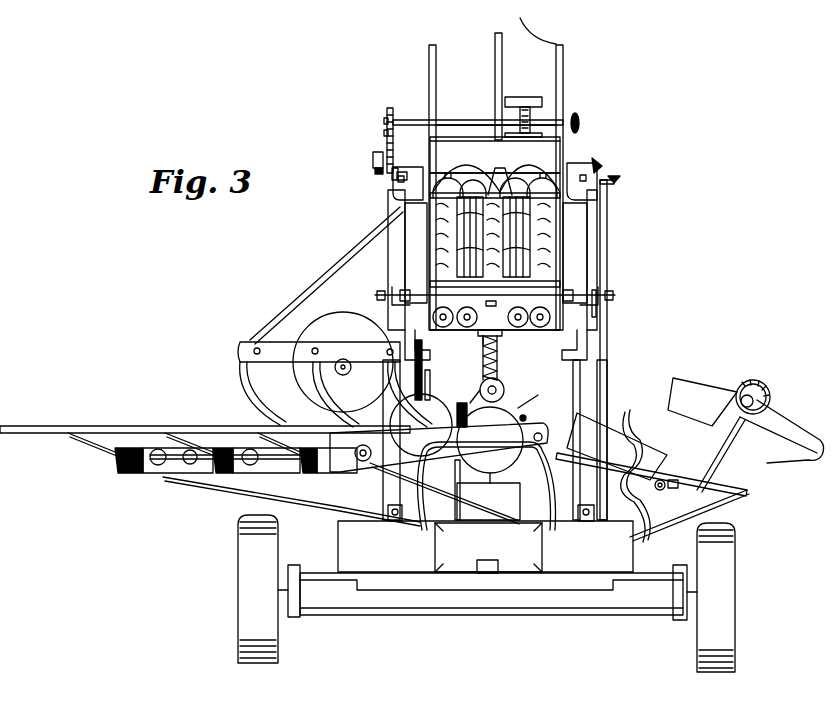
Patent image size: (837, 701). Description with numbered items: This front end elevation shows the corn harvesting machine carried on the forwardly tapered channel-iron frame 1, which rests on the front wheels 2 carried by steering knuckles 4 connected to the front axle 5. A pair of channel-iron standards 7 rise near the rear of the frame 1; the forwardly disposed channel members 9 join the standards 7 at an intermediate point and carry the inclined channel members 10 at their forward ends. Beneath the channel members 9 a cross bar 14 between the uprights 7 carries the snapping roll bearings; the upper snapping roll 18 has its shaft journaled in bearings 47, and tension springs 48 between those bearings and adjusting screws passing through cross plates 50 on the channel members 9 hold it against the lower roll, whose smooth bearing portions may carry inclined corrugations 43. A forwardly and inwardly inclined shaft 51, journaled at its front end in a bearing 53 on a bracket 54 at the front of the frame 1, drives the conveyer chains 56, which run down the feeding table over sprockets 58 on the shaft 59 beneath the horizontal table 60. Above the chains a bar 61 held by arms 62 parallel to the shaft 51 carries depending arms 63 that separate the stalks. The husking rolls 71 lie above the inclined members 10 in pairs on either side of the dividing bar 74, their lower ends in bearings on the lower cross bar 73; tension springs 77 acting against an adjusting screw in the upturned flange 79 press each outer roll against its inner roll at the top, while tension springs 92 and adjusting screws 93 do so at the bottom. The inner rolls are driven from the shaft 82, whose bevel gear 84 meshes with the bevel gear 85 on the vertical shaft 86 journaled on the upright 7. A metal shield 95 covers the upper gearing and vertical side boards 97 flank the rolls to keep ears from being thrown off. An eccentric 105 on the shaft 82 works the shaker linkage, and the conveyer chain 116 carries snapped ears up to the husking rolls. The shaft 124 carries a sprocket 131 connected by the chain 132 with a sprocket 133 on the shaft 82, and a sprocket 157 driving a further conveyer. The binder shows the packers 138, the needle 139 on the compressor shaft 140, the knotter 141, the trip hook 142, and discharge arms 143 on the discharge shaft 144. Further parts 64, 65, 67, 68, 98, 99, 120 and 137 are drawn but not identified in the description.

The frame 1 is at (340, 532).
The front wheels 2 is at (238, 558).
The steering knuckles 4 is at (288, 598).
The front axle 5 is at (480, 596).
The standards 7 is at (388, 266).
The forwardly disposed channel members 9 is at (425, 340).
The inclined channel members 10 is at (410, 250).
The cross bar 14 is at (500, 412).
The upper snapping roll 18 is at (504, 388).
The inclined corrugations 43 is at (480, 336).
The bearings 47 is at (471, 388).
The tension springs 48 is at (498, 360).
The cross plates 50 is at (532, 330).
The shaft 51 is at (421, 425).
The bearing 53 is at (545, 428).
The bracket 54 is at (508, 460).
The conveyer chains 56 is at (270, 466).
The sprockets 58 is at (165, 465).
The shaft 59 is at (176, 452).
The horizontal table 60 is at (148, 426).
The bar 61 is at (277, 344).
The arms 62 is at (318, 290).
The depending arms 63 is at (330, 395).
The pin 64 is at (524, 416).
The guide strip 65 is at (430, 380).
The block 67 is at (456, 409).
The link 68 is at (536, 394).
The husking rolls 71 is at (500, 175).
The lower cross bar 73 is at (607, 180).
The dividing bar 74 is at (492, 175).
The tension springs 77 is at (408, 167).
The upturned flange 79 is at (392, 178).
The shaft 82 is at (402, 172).
The bevel gear 84 is at (600, 160).
The bevel gear 85 is at (620, 178).
The vertical shaft 86 is at (607, 258).
The tension springs 92 is at (392, 292).
The adjusting screws 93 is at (377, 296).
The metal shield 95 is at (457, 137).
The side boards 97 is at (436, 62).
The disc 98 is at (343, 362).
The hub 99 is at (345, 369).
The eccentric 105 is at (373, 158).
The conveyer chain 116 is at (463, 486).
The center post 120 is at (500, 38).
The shaft 124 is at (410, 120).
The sprocket 131 is at (390, 108).
The chain 132 is at (386, 120).
The sprocket 133 is at (386, 133).
The bar 137 is at (750, 494).
The packers 138 is at (640, 445).
The needle 139 is at (607, 440).
The compressor shaft 140 is at (664, 480).
The knotter 141 is at (705, 392).
The trip hook 142 is at (735, 470).
The discharge arms 143 is at (795, 424).
The discharge shaft 144 is at (750, 380).
The sprocket 157 is at (579, 119).